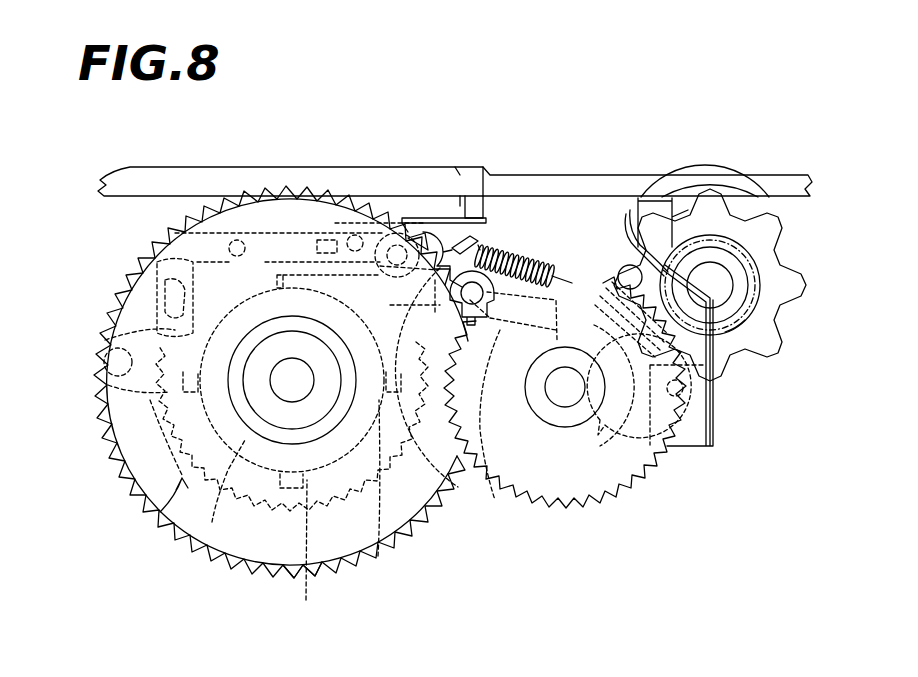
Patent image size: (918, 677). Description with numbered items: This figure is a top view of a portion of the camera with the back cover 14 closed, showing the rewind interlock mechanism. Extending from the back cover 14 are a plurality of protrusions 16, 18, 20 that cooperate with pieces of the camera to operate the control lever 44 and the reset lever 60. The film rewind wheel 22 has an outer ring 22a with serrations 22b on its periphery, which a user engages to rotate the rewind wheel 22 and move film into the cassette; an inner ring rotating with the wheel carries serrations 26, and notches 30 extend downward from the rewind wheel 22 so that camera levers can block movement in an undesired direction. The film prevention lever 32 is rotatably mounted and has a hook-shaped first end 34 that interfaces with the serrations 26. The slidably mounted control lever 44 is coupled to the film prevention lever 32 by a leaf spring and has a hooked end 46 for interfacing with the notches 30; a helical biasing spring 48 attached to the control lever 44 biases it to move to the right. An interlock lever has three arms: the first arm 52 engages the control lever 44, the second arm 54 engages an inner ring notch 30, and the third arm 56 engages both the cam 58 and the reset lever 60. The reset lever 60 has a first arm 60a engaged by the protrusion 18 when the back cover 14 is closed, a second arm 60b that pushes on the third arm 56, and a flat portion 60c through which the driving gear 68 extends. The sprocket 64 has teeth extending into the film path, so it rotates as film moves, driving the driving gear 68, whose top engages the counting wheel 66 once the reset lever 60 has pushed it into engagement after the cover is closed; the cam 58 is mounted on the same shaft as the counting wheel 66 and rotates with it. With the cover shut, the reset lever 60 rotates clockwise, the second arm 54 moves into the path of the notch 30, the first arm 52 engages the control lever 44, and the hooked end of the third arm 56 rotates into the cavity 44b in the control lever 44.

The back cover 14 is at (133, 176).
The protrusion 16 is at (474, 198).
The protrusion 18 is at (663, 213).
The protrusion 20 is at (313, 233).
The film rewind wheel 22 is at (252, 576).
The outer ring 22a is at (340, 568).
The serrations 22b is at (160, 512).
The serrations 26 is at (212, 548).
The notches 30 is at (305, 600).
The film prevention lever 32 is at (102, 423).
The first end 34 is at (123, 480).
The control lever 44 is at (447, 232).
The cavity 44b is at (395, 242).
The hooked end 46 is at (263, 237).
The biasing spring 48 is at (533, 252).
The first arm 52 is at (453, 354).
The second arm 54 is at (490, 473).
The third arm 56 is at (430, 242).
The cam 58 is at (603, 482).
The reset lever 60 is at (688, 450).
The first arm 60a is at (698, 250).
The second arm 60b is at (588, 290).
The flat portion 60c is at (743, 350).
The sprocket 64 is at (782, 277).
The counting wheel 66 is at (563, 472).
The driving gear 68 is at (630, 210).